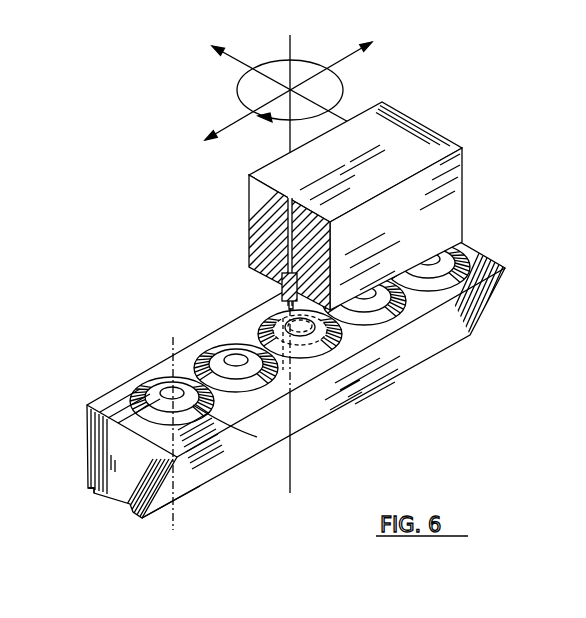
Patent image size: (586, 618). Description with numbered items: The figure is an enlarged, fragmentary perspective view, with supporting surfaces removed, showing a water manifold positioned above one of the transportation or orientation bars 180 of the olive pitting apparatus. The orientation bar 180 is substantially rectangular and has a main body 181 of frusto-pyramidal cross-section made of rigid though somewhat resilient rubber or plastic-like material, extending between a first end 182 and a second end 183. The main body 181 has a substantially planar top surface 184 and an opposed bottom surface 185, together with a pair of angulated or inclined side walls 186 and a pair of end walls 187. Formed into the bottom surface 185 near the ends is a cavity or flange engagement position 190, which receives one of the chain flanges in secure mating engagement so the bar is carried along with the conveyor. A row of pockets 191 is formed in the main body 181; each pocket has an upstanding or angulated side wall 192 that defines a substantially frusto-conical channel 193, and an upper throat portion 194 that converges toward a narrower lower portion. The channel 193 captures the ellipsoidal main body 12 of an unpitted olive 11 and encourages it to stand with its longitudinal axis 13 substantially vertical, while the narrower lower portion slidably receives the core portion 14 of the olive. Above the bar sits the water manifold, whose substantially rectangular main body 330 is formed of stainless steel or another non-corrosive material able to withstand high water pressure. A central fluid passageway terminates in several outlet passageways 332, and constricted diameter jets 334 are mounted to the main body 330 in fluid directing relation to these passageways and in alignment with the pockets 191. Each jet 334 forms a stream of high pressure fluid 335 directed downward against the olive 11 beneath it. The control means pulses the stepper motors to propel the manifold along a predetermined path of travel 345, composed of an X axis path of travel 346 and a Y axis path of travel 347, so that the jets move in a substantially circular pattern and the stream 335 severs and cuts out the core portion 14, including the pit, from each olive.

The unpitted olive 11 is at (145, 396).
The main body 12 is at (240, 378).
The longitudinal axis 13 is at (171, 370).
The core portion 14 is at (138, 410).
The transportation bar 180 is at (300, 387).
The main body 181 is at (250, 445).
The first end 182 is at (470, 305).
The second end 183 is at (88, 465).
The top surface 184 is at (125, 394).
The bottom surface 185 is at (200, 457).
The side wall 186 is at (88, 435).
The end wall 187 is at (128, 504).
The cavity 190 is at (102, 496).
The pocket 191 is at (261, 395).
The side wall 192 is at (145, 395).
The channel 193 is at (190, 432).
The throat portion 194 is at (216, 352).
The main body 330 is at (443, 189).
The outlet passageway 332 is at (311, 219).
The jet 334 is at (281, 282).
The stream of high pressure fluid 335 is at (283, 313).
The path of travel 345 is at (296, 57).
The X axis path of travel 346 is at (342, 65).
The Y axis path of travel 347 is at (233, 55).